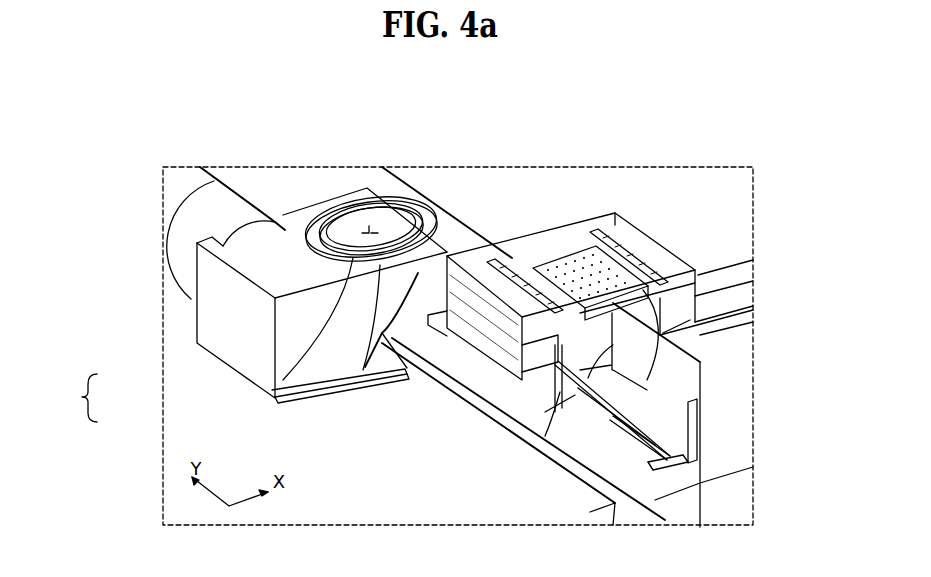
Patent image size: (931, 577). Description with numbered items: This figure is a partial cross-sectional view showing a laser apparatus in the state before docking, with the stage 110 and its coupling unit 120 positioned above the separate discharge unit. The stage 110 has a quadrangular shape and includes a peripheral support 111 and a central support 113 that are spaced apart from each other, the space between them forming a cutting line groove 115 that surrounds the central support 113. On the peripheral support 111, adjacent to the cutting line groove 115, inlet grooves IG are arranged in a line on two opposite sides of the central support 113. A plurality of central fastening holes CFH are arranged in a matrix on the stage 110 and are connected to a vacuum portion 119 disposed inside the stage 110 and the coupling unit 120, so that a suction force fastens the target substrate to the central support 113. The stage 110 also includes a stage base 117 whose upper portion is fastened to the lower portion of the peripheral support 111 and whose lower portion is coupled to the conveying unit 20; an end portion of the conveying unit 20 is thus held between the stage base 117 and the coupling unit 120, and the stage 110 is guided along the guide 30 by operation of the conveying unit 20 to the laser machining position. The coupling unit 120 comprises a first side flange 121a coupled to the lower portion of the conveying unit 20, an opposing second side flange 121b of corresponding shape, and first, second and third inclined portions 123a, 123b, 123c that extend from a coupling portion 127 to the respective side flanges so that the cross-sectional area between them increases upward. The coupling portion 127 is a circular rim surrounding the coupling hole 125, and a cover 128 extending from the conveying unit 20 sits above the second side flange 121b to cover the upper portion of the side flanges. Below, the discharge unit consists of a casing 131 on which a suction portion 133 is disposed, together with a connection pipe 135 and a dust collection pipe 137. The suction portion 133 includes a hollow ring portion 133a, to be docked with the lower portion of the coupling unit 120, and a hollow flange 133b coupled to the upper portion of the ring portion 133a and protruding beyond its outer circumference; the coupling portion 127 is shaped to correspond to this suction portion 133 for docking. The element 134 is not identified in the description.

The dust collection pipe 137 is at (165, 188).
The connection pipe 135 is at (172, 240).
The casing 131 is at (223, 317).
The suction portion 133 is at (72, 398).
The ring portion 133a is at (278, 372).
The flange 133b is at (282, 406).
The ring 134 is at (368, 228).
The guide 30 is at (444, 175).
The cutting line groove 115 is at (526, 252).
The central fastening holes CFH is at (557, 258).
The central support 113 is at (582, 258).
The peripheral support 111 is at (633, 220).
The inlet groove IG is at (660, 235).
The stage 110 is at (700, 262).
The stage base 117 is at (700, 296).
The conveying unit 20 is at (745, 330).
The vacuum portion 119 is at (705, 370).
The first side flange 121a is at (690, 380).
The coupling unit 120 is at (720, 438).
The cover 128 is at (440, 328).
The third inclined portion 123c is at (478, 372).
The second side flange 121b is at (517, 430).
The second inclined portion 123b is at (567, 392).
The coupling portion 127 is at (575, 512).
The coupling hole 125 is at (588, 378).
The first inclined portion 123a is at (662, 405).